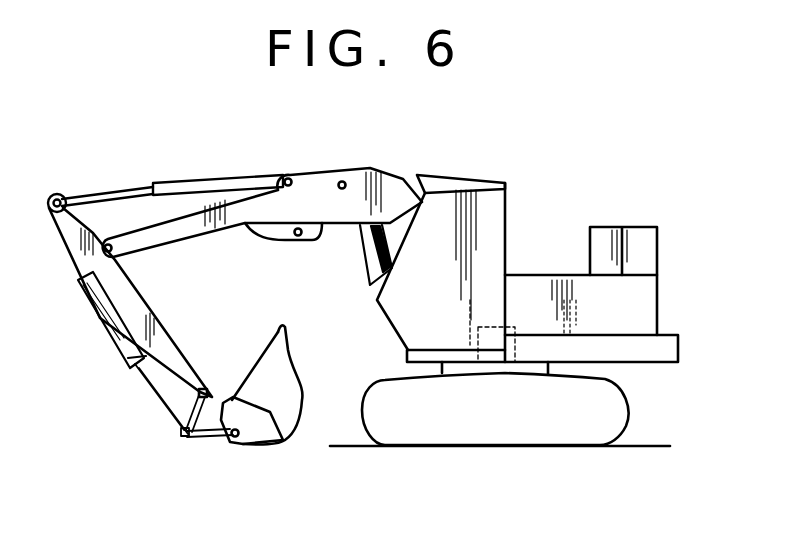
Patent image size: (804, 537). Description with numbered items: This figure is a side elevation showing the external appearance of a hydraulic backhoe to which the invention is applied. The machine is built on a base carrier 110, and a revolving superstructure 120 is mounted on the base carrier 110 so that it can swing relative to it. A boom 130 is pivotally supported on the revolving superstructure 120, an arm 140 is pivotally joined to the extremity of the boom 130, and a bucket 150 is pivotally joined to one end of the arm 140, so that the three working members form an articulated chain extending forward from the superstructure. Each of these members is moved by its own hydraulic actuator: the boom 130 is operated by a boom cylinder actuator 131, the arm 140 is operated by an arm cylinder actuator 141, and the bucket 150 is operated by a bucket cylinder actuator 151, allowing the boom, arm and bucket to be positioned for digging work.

The base carrier 110 is at (482, 432).
The revolving superstructure 120 is at (682, 350).
The boom 130 is at (192, 230).
The boom cylinder actuator 131 is at (372, 255).
The arm 140 is at (105, 336).
The arm cylinder actuator 141 is at (230, 173).
The bucket 150 is at (292, 368).
The bucket cylinder actuator 151 is at (128, 367).